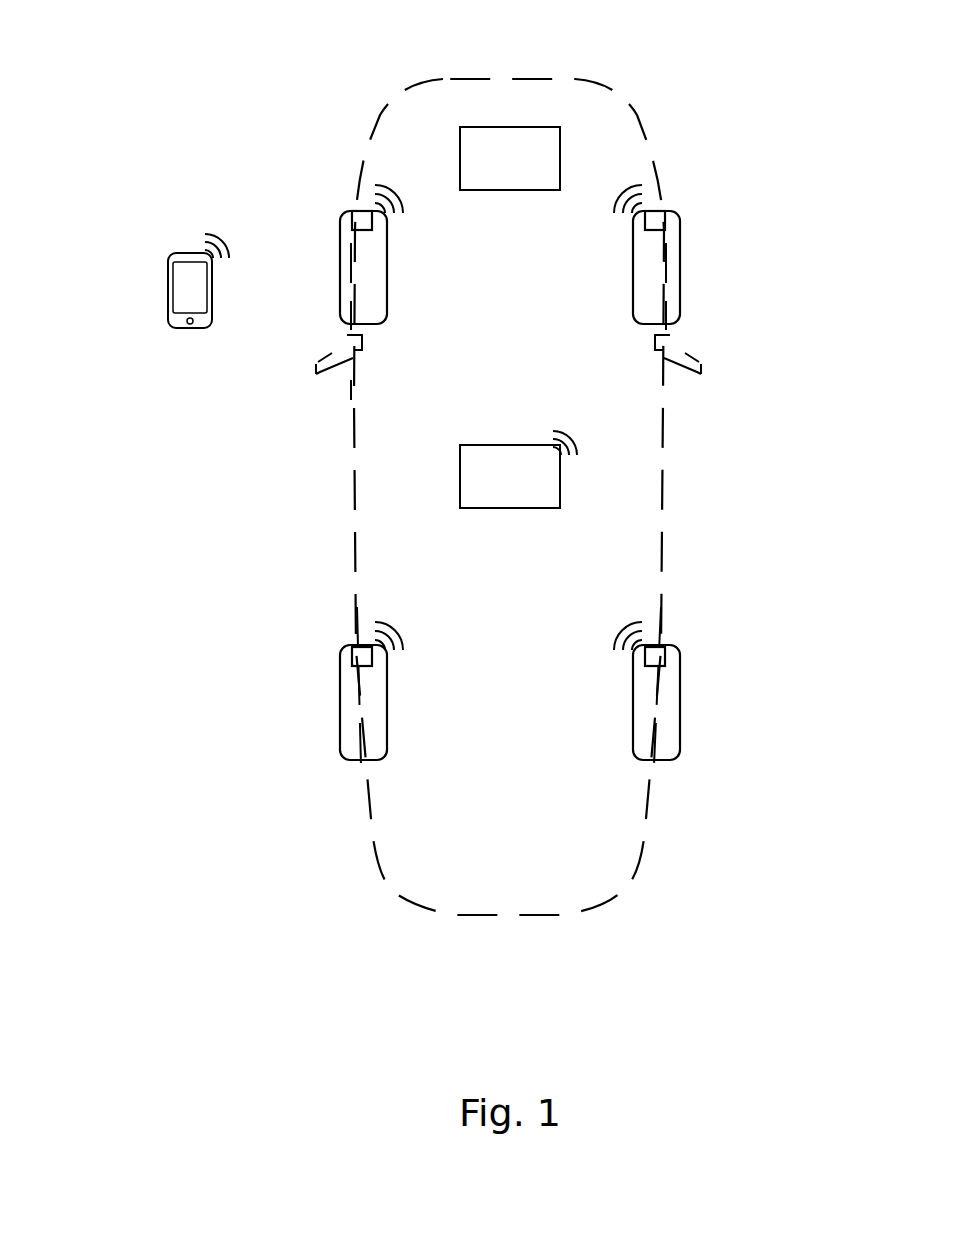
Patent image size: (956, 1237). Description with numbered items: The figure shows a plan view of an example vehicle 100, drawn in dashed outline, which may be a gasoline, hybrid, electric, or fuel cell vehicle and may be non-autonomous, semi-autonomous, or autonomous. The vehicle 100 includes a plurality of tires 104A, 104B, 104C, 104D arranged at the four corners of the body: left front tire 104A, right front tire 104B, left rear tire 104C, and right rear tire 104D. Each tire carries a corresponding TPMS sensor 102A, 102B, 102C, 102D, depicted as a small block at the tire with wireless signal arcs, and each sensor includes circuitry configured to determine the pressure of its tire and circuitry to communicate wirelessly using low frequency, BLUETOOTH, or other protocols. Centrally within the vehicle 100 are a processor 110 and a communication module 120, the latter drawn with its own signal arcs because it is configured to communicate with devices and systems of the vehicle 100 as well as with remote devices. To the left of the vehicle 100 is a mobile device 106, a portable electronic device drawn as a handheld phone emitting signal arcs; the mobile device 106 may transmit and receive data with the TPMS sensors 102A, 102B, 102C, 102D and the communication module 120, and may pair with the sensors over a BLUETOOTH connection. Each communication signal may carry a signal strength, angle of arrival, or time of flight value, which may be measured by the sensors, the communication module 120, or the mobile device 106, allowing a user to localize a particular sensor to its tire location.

The vehicle 100 is at (507, 78).
The TPMS sensor 102A is at (348, 216).
The TPMS sensor 102B is at (668, 216).
The TPMS sensor 102C is at (348, 656).
The TPMS sensor 102D is at (668, 656).
The tire 104A is at (340, 300).
The tire 104B is at (682, 300).
The tire 104C is at (340, 723).
The tire 104D is at (682, 723).
The mobile device 106 is at (183, 252).
The processor 110 is at (510, 158).
The communication module 120 is at (518, 469).